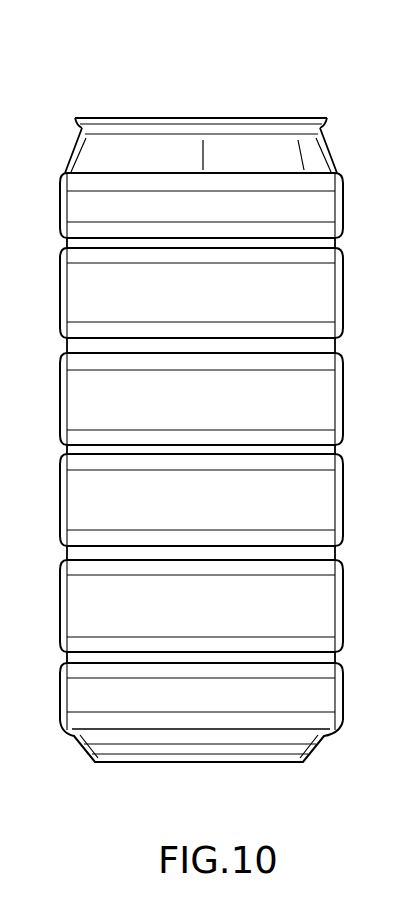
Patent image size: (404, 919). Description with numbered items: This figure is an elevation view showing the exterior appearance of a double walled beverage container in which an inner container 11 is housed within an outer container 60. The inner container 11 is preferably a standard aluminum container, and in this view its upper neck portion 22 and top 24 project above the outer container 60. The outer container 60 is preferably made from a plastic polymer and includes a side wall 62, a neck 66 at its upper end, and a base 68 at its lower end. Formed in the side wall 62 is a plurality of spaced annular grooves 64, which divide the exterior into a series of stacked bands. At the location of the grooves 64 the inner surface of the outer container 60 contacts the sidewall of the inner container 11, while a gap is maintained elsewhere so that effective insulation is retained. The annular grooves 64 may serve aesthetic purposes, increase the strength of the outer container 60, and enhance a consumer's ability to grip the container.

The inner container 11 is at (346, 146).
The upper neck portion 22 is at (81, 141).
The top 24 is at (205, 100).
The outer container 60 is at (363, 363).
The side wall 62 is at (344, 292).
The annular grooves 64 is at (340, 241).
The neck 66 is at (340, 181).
The base 68 is at (146, 780).